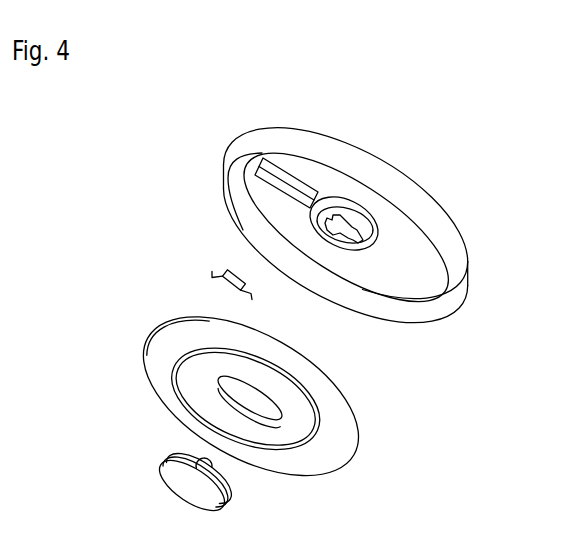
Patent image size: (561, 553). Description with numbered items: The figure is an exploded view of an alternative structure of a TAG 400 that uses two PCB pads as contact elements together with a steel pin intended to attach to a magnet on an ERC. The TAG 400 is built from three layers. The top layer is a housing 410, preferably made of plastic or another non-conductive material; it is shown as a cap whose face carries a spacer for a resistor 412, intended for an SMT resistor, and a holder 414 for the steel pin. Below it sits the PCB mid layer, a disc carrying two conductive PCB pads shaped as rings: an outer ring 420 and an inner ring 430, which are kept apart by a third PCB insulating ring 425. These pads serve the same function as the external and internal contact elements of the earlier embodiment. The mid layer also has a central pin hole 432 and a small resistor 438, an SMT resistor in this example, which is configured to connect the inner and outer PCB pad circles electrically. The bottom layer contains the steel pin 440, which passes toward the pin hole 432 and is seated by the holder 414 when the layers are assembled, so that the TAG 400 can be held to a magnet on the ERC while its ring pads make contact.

The TAG 400 is at (72, 140).
The housing 410 is at (363, 151).
The spacer for a resistor 412 is at (295, 187).
The holder for a steel pin 414 is at (347, 226).
The outer ring 420 is at (295, 380).
The PCB insulating ring 425 is at (307, 442).
The inner ring 430 is at (292, 422).
The pin hole 432 is at (268, 402).
The resistor 438 is at (232, 287).
The steel pin 440 is at (230, 495).